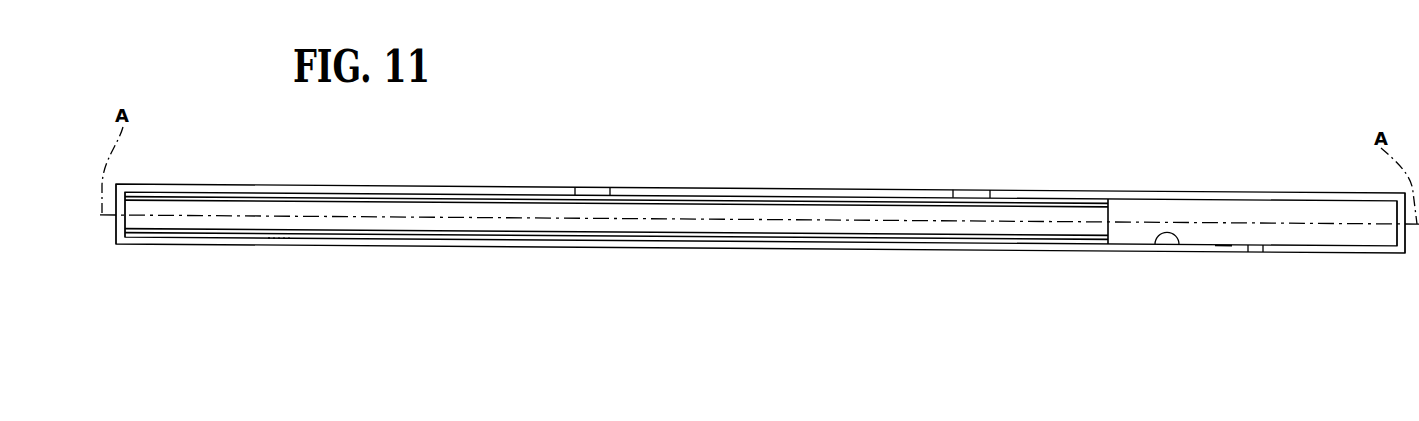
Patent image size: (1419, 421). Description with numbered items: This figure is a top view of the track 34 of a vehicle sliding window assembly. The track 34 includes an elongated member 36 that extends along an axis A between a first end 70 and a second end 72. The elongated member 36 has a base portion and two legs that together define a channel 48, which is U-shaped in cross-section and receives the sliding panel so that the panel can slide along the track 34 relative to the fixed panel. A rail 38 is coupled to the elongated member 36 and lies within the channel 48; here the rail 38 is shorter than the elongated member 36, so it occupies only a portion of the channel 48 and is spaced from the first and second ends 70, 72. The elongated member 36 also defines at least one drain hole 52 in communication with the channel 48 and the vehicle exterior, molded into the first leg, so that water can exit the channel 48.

The track 34 is at (704, 176).
The elongated member 36 is at (397, 190).
The rail 38 is at (490, 212).
The channel 48 is at (1154, 250).
The drain hole 52 is at (288, 240).
The first end 70 is at (115, 232).
The second end 72 is at (1398, 243).